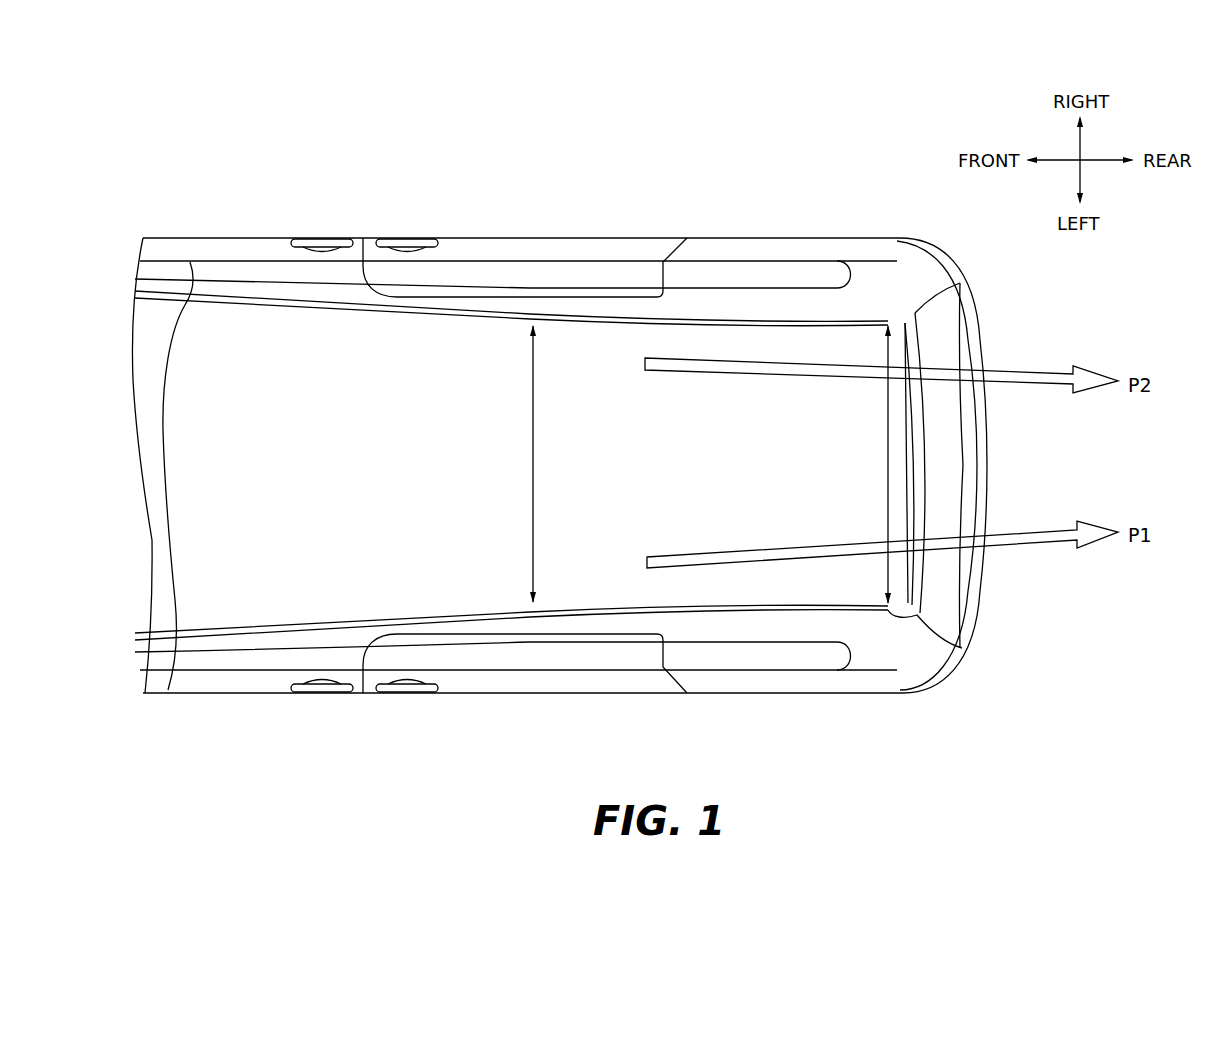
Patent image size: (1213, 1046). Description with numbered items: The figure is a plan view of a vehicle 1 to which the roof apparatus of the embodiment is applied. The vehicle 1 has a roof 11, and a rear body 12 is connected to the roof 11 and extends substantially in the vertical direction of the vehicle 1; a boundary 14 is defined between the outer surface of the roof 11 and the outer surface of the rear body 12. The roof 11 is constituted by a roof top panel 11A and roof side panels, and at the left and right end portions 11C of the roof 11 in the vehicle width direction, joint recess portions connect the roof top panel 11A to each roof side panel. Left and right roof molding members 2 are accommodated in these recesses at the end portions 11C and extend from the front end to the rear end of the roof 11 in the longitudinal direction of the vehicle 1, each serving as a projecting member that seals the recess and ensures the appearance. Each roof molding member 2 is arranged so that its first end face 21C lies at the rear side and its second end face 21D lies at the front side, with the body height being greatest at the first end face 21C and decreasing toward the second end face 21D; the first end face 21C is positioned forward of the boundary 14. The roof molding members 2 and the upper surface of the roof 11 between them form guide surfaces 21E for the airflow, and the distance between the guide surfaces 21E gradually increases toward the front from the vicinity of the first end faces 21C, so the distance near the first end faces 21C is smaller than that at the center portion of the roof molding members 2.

The vehicle 1 is at (585, 232).
The roof molding member 2 is at (782, 310).
The roof 11 is at (432, 360).
The roof top panel 11A is at (480, 587).
The end portion 11C is at (265, 303).
The rear body 12 is at (945, 332).
The boundary 14 is at (917, 452).
The first end face 21C is at (886, 310).
The second end face 21D is at (190, 262).
The guide surface 21E is at (675, 313).